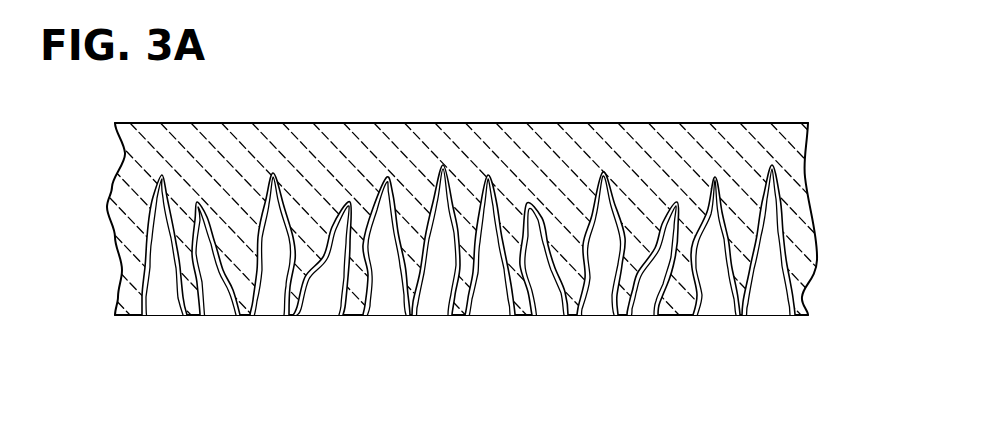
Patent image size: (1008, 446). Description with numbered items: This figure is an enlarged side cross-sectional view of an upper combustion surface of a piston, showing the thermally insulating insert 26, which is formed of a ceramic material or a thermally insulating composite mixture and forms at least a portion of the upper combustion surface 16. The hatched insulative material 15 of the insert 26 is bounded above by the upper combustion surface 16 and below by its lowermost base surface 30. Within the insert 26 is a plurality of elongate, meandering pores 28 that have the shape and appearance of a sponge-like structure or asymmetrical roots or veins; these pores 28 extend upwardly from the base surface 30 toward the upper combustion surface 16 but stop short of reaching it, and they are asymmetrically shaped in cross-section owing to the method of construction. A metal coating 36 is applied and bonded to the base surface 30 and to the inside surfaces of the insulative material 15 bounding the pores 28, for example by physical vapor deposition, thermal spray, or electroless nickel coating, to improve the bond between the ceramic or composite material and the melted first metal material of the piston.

The substrate layer 15 is at (662, 144).
The upper combustion surface 16 is at (522, 122).
The thermally insulating insert 26 is at (783, 103).
The pores 28 is at (220, 317).
The base surface 30 is at (353, 317).
The metal coating 36 is at (423, 317).